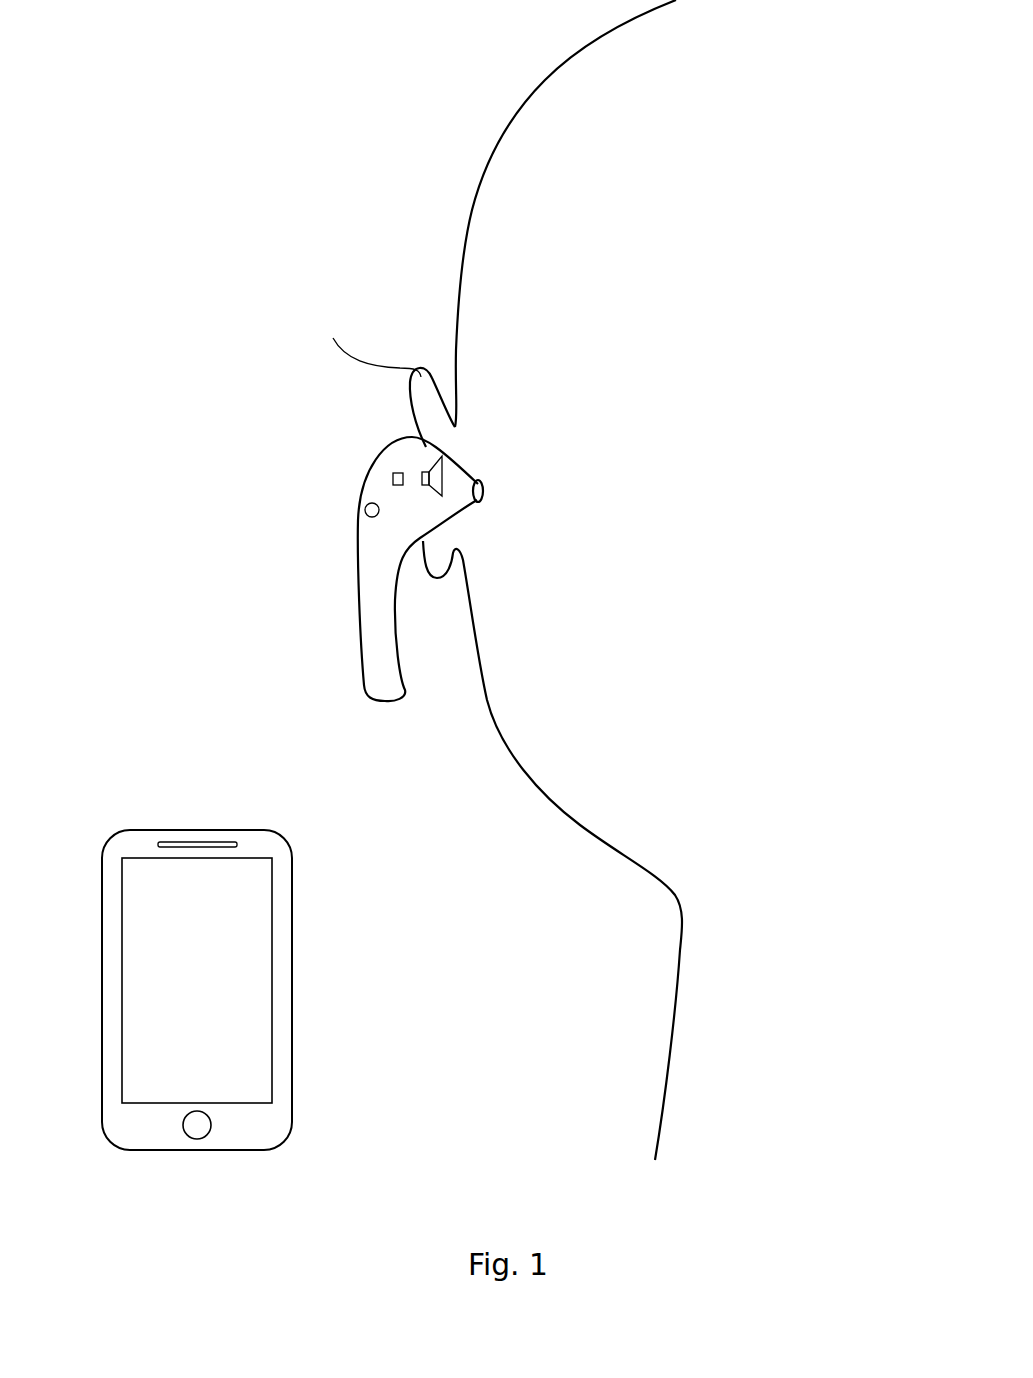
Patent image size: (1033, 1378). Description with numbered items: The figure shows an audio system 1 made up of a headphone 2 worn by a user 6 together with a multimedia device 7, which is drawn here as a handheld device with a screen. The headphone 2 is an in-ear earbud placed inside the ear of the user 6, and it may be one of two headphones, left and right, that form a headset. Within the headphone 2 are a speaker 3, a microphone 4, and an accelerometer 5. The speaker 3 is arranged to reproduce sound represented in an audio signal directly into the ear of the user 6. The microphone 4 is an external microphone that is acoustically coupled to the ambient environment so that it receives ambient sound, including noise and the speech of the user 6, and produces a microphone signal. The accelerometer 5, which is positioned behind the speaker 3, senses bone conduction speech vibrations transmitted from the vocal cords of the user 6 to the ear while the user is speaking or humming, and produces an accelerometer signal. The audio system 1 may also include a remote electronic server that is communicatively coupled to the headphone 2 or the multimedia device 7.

The audio system 1 is at (203, 124).
The headphone 2 is at (381, 710).
The speaker 3 is at (428, 468).
The microphone 4 is at (363, 509).
The accelerometer 5 is at (402, 485).
The user 6 is at (650, 327).
The multimedia device 7 is at (190, 1022).